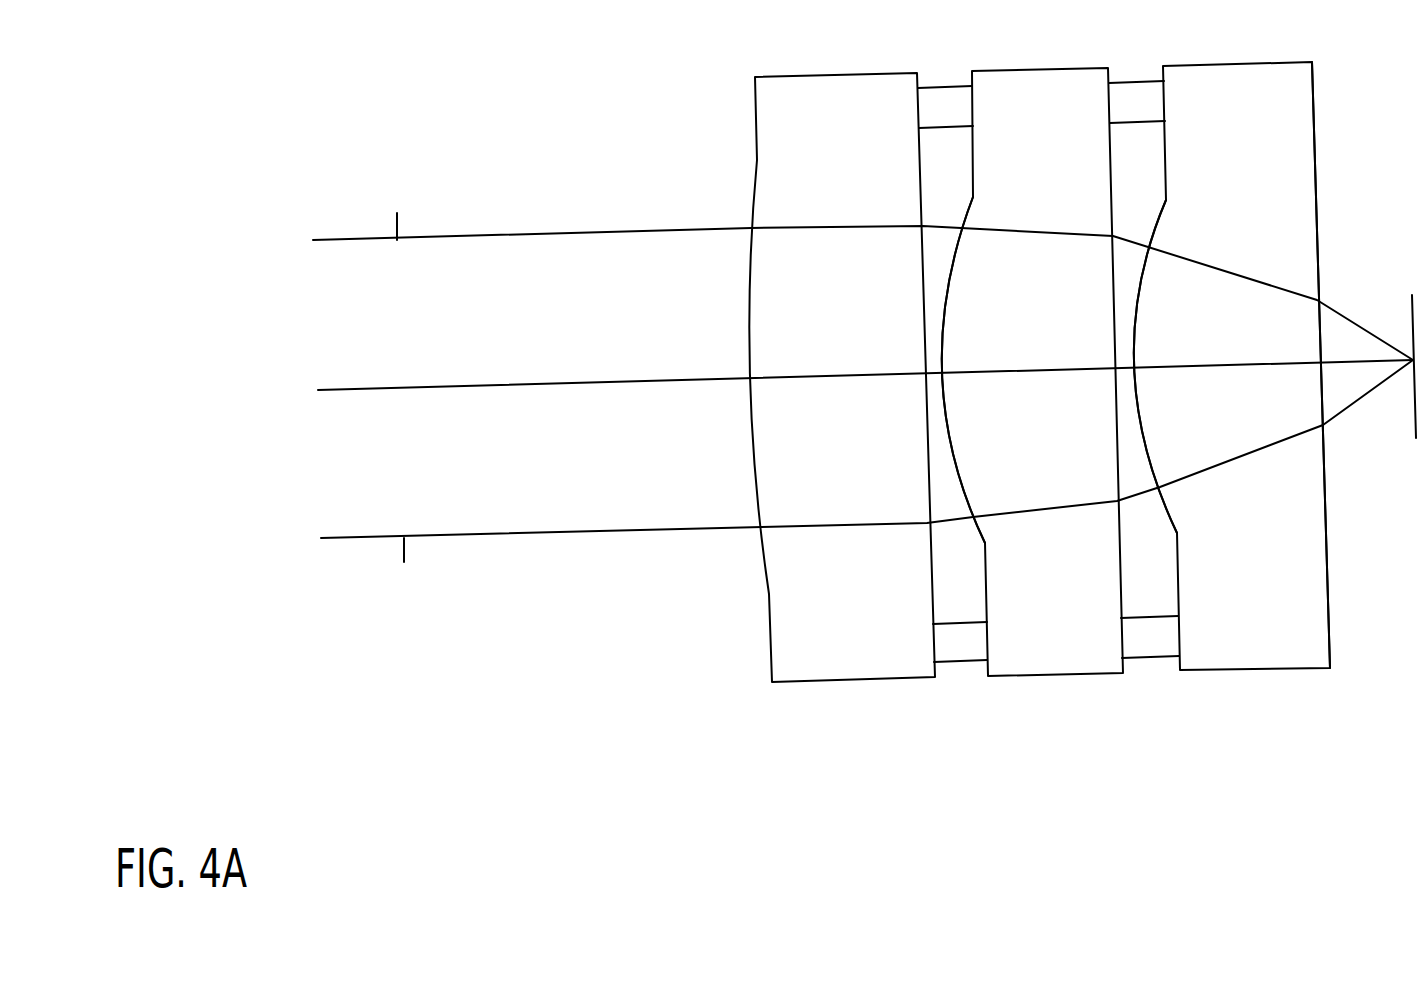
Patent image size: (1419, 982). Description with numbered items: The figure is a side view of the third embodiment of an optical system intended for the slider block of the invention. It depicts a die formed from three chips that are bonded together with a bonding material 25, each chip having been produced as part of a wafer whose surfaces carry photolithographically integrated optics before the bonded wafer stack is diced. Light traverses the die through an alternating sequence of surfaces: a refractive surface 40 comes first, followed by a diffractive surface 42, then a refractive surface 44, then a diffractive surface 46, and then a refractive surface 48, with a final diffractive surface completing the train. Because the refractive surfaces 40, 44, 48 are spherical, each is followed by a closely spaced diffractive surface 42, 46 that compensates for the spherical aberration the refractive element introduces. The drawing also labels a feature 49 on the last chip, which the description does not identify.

The bonding material 25 is at (945, 87).
The refractive surface 40 is at (750, 263).
The diffractive surface 42 is at (923, 228).
The refractive surface 44 is at (973, 528).
The diffractive surface 46 is at (1113, 222).
The refractive surface 48 is at (1165, 505).
The third lens rear surface 49 is at (1317, 223).